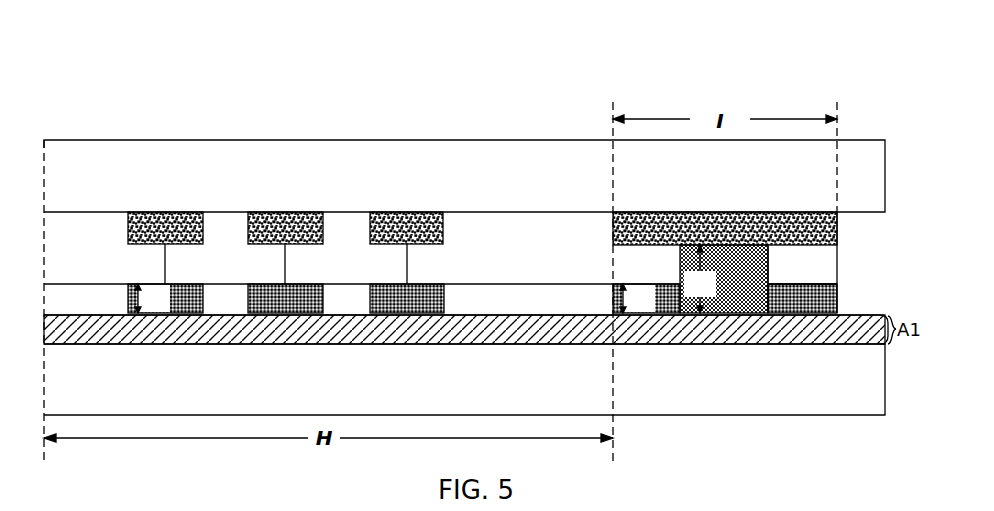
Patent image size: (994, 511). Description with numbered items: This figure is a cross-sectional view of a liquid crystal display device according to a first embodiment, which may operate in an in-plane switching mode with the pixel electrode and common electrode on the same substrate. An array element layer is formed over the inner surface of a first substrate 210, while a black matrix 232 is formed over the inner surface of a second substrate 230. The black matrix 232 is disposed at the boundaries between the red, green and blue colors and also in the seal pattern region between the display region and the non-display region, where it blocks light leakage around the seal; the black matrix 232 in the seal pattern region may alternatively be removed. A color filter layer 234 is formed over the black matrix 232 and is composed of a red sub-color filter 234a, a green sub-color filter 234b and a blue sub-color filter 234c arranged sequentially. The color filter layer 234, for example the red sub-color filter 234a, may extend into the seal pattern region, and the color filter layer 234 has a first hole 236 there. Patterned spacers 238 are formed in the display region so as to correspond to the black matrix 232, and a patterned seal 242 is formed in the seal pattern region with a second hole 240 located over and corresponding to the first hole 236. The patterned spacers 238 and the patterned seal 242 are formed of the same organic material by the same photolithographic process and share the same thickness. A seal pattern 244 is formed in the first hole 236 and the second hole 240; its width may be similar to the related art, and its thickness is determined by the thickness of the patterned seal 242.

The first substrate 210 is at (88, 385).
The second substrate 230 is at (97, 182).
The black matrix 232 is at (165, 214).
The color filter layer 234 is at (327, 84).
The red sub-color filter 234a is at (73, 225).
The green sub-color filter 234b is at (228, 225).
The blue sub-color filter 234c is at (347, 225).
The first hole 236 is at (712, 314).
The patterned spacers 238 is at (173, 314).
The second hole 240 is at (752, 314).
The patterned seal 242 is at (656, 315).
The seal pattern 244 is at (773, 281).